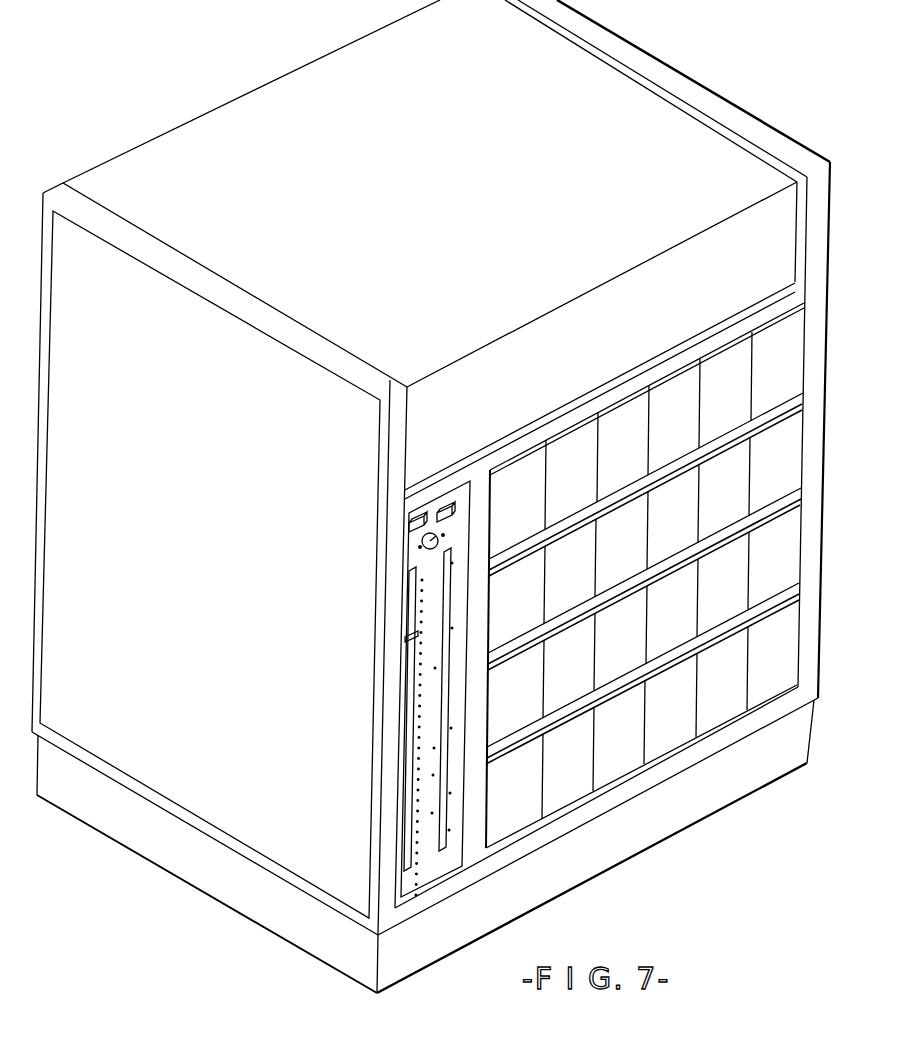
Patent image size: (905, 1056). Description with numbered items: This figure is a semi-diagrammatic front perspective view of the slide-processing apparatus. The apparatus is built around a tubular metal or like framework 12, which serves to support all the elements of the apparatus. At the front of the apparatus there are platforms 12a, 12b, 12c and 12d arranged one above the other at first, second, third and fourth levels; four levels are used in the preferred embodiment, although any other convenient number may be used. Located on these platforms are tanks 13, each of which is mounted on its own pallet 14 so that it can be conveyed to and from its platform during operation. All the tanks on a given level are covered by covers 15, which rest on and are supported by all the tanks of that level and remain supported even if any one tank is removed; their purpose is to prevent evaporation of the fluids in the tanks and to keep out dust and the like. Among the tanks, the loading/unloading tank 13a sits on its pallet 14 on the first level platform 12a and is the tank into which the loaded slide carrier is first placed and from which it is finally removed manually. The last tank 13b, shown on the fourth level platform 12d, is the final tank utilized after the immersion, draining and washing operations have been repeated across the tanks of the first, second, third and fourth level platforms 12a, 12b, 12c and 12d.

The framework 12 is at (737, 122).
The first level platform 12a is at (597, 808).
The second level platform 12b is at (620, 700).
The third level platform 12c is at (676, 590).
The fourth level platform 12d is at (686, 479).
The tank 13 is at (632, 453).
The loading/unloading tank 13a is at (525, 768).
The last tank 13b is at (536, 518).
The pallet 14 is at (619, 593).
The cover 15 is at (730, 349).